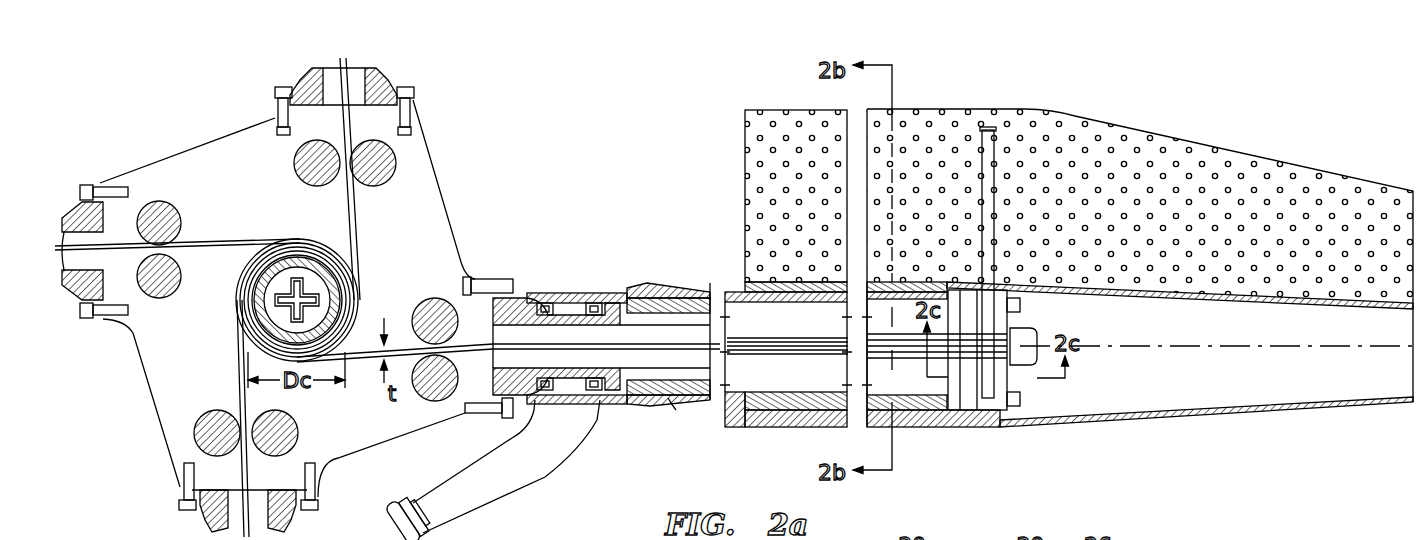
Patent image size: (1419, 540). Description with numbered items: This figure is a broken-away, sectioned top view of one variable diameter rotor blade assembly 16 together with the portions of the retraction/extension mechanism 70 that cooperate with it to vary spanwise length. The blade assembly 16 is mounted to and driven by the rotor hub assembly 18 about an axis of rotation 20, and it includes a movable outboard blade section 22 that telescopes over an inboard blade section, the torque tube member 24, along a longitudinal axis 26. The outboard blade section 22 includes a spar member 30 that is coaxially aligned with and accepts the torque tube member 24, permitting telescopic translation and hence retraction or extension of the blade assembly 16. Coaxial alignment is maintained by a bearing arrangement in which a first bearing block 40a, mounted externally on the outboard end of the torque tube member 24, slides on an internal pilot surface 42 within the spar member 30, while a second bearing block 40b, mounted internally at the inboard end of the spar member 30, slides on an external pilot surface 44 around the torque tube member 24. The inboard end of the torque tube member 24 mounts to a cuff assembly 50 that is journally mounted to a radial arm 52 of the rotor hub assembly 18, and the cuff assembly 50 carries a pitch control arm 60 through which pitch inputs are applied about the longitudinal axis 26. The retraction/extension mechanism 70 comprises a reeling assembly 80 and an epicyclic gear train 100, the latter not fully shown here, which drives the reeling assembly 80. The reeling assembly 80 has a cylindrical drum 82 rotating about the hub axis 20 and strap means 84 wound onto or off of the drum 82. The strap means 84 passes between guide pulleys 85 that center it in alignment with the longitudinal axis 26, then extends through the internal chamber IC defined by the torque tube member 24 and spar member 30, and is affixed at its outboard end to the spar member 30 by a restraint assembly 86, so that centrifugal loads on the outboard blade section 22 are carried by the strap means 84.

The VDR blade assembly 16 is at (1157, 112).
The rotor hub assembly 18 is at (350, 447).
The axis of rotation 20 is at (297, 296).
The outboard blade section 22 is at (1225, 148).
The torque tube member 24 is at (697, 282).
The longitudinal axis 26 is at (1270, 347).
The spar member 30 is at (752, 287).
The first bearing block 40a is at (945, 408).
The second bearing block 40b is at (745, 399).
The internal pilot surface 42 is at (905, 400).
The external pilot surface 44 is at (770, 425).
The cuff assembly 50 is at (633, 418).
The radial arm 52 is at (590, 404).
The pitch control arm 60 is at (490, 493).
The retraction/extension mechanism 70 is at (488, 192).
The reeling assembly 80 is at (613, 337).
The cylindrical drum 82 is at (250, 282).
The strap means 84 is at (352, 199).
The guide pulleys 85 is at (300, 167).
The restraint assembly 86 is at (1003, 388).
The epicyclic gear train 100 is at (318, 292).
The internal chamber IC is at (650, 327).